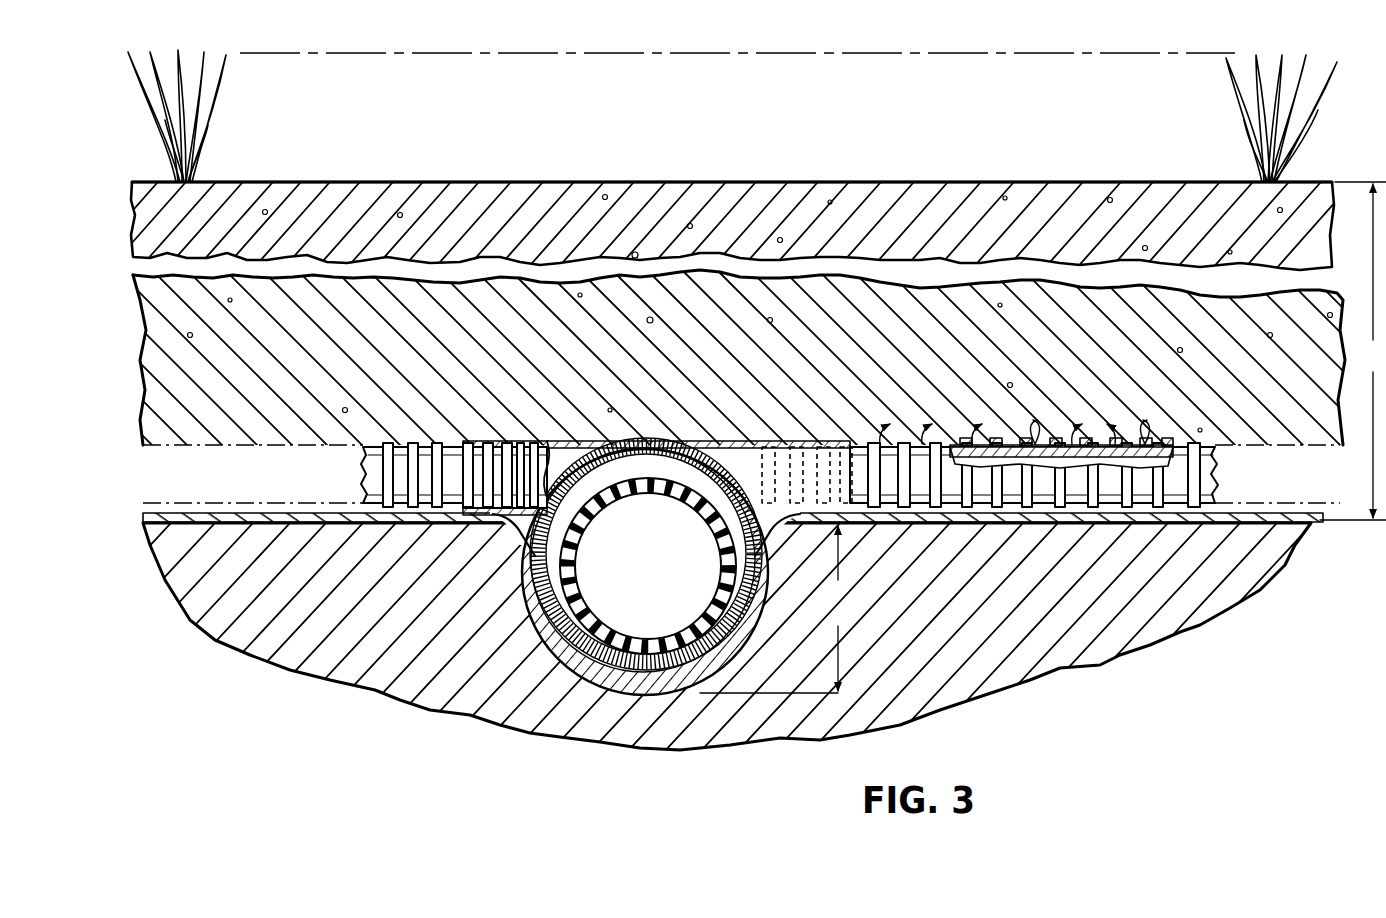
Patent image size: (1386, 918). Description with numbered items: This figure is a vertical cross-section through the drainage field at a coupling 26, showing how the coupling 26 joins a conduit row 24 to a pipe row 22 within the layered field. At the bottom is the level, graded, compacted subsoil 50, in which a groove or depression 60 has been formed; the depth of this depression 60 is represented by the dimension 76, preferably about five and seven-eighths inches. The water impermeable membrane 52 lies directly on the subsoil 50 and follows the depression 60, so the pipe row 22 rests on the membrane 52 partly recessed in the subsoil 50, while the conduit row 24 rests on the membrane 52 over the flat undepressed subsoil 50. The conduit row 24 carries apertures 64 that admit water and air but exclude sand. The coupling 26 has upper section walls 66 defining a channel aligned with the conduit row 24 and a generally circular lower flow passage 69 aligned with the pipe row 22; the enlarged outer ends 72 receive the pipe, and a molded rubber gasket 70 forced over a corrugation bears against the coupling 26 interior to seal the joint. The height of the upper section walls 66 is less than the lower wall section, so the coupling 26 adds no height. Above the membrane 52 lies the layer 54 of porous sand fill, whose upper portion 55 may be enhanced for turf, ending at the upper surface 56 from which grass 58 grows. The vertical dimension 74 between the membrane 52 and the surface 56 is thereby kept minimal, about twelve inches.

The pipe row 22 is at (648, 566).
The conduit row 24 is at (365, 480).
The coupling 26 is at (656, 545).
The compacted subsoil 50 is at (290, 662).
The water impermeable membrane 52 is at (185, 494).
The layer of uniform porous fill media 54 is at (160, 364).
The upper portion of the sand layer 55 is at (128, 219).
The upper surface 56 is at (140, 181).
The grass 58 is at (138, 115).
The groove or depression 60 is at (560, 676).
The apertures 64 is at (1048, 441).
The upper section walls 66 is at (503, 432).
The lower flow passage 69 is at (664, 594).
The molded rubber gasket 70 is at (522, 434).
The enlarged outer ends 72 is at (683, 452).
The vertical dimension between the membrane and the athletic surface 74 is at (1353, 351).
The depth of the depressions 76 is at (777, 609).